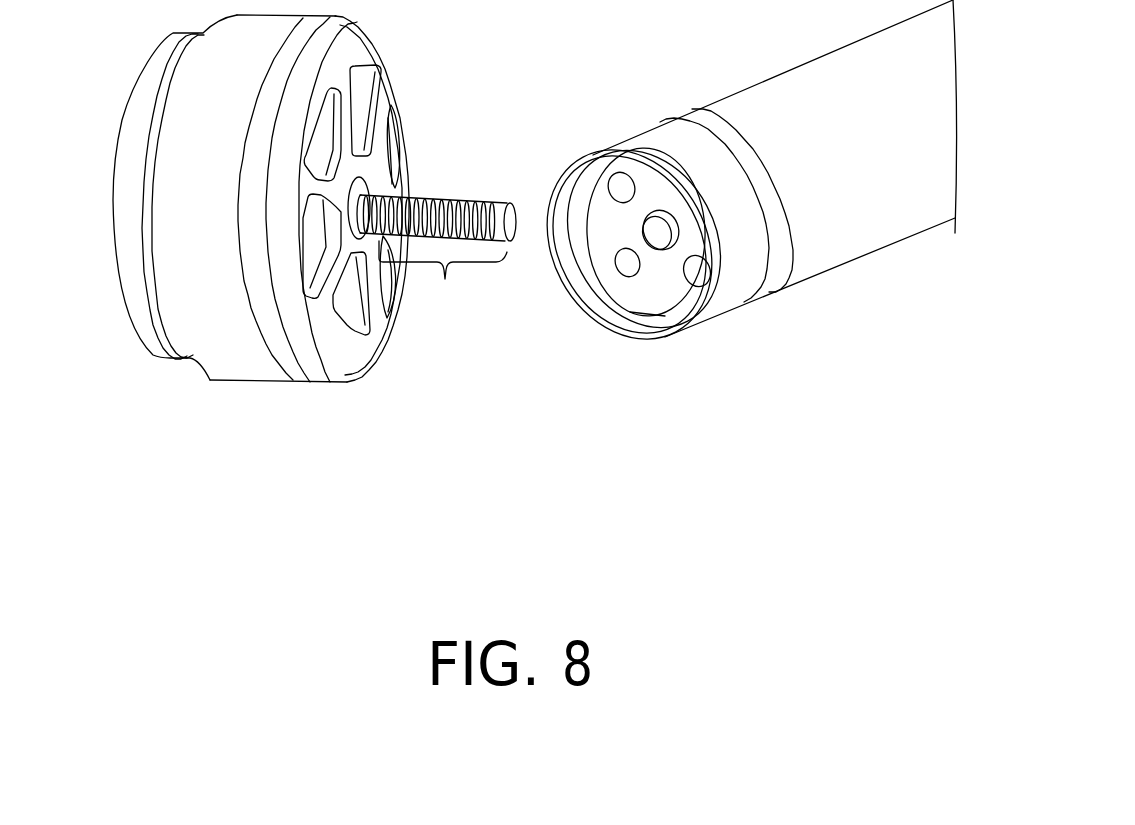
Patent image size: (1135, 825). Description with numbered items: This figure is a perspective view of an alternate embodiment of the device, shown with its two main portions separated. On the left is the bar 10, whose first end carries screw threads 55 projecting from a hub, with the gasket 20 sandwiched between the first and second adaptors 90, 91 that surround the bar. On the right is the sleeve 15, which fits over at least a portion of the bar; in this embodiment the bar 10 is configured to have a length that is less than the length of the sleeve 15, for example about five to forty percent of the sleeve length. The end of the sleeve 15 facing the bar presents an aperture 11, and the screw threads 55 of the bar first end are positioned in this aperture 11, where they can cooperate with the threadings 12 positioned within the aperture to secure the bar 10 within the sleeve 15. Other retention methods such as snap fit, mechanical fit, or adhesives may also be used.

The bar 10 is at (470, 218).
The aperture 11 is at (672, 243).
The threadings 12 is at (655, 250).
The sleeve 15 is at (843, 190).
The gasket 20 is at (222, 323).
The screw threads 55 is at (443, 278).
The first adaptor 90 is at (132, 292).
The second adaptor 91 is at (303, 350).